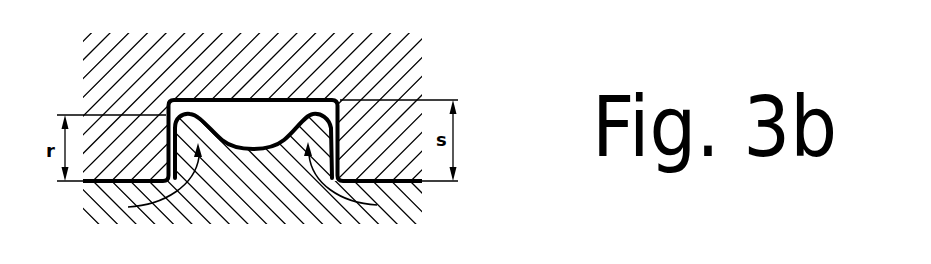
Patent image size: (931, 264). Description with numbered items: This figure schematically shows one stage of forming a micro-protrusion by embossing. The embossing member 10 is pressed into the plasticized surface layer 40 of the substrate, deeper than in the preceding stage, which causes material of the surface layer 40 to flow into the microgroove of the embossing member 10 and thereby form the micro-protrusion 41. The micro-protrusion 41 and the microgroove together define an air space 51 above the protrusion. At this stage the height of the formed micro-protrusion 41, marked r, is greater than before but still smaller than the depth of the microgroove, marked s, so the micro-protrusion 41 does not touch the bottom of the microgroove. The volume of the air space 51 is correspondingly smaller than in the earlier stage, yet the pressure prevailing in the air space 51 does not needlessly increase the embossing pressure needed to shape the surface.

The embossing member 10 is at (222, 60).
The air space 51 is at (262, 113).
The surface layer 40 is at (287, 213).
The micro-protrusion 41 is at (279, 160).